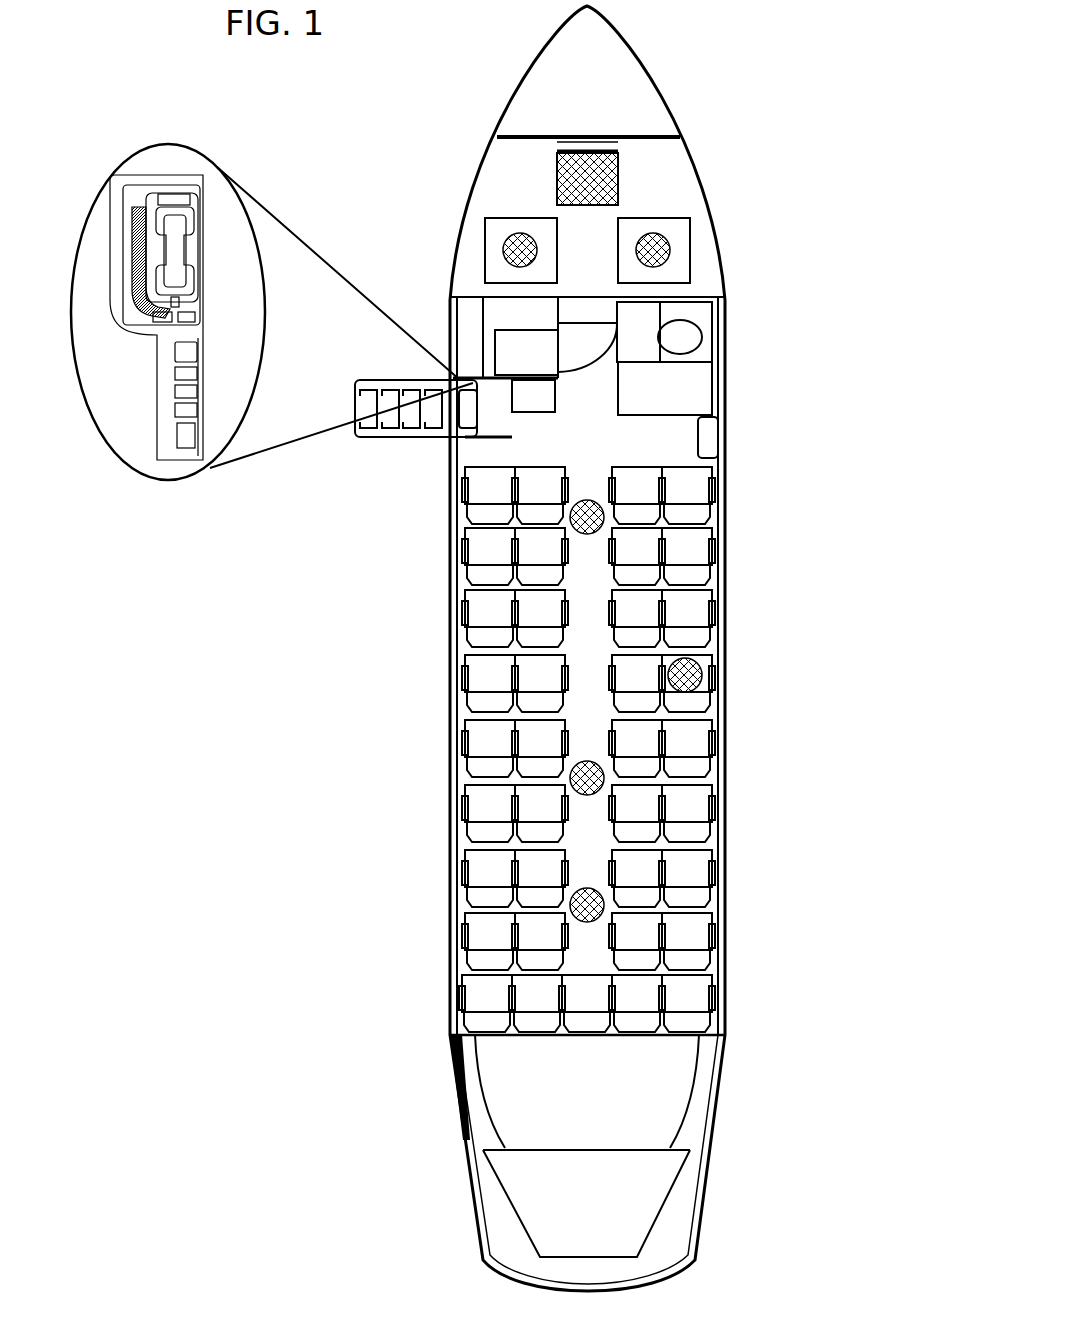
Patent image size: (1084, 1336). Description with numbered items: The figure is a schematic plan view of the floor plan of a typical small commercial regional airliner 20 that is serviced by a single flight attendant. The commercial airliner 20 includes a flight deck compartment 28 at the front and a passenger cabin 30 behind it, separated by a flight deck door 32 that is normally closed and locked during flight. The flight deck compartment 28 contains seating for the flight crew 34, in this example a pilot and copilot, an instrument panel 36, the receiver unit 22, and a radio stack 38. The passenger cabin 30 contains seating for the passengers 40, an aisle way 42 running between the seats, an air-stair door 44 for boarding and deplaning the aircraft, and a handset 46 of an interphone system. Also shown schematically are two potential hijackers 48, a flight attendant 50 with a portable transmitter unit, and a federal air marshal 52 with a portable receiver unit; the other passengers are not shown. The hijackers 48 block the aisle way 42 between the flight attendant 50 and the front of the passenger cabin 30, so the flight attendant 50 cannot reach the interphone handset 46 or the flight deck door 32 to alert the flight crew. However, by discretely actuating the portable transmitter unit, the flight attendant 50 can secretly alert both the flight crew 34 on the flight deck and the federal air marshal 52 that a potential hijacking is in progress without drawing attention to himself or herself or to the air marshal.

The commercial regional airliner 20 is at (722, 470).
The receiver unit 22 is at (607, 146).
The flight deck compartment 28 is at (525, 200).
The passenger cabin 30 is at (577, 447).
The flight deck door 32 is at (597, 323).
The seating for the flight crew 34 is at (522, 247).
The instrument panel 36 is at (653, 135).
The radio stack 38 is at (567, 175).
The seating for the passengers 40 is at (688, 612).
The aisle way 42 is at (588, 680).
The air-stair door 44 is at (412, 417).
The handset 46 is at (272, 312).
The potential hijackers 48 is at (600, 517).
The flight attendant 50 is at (595, 782).
The federal air marshal 52 is at (690, 673).